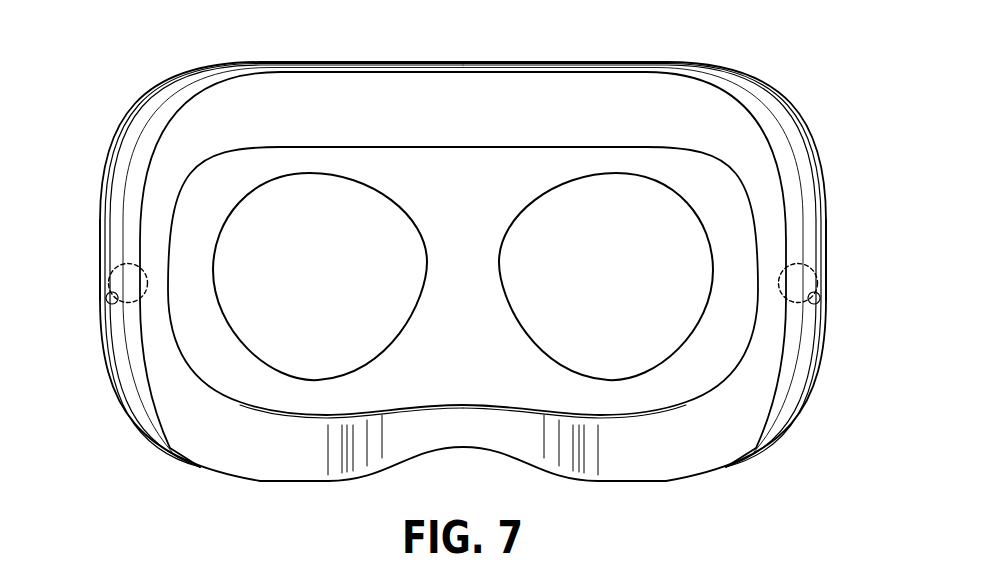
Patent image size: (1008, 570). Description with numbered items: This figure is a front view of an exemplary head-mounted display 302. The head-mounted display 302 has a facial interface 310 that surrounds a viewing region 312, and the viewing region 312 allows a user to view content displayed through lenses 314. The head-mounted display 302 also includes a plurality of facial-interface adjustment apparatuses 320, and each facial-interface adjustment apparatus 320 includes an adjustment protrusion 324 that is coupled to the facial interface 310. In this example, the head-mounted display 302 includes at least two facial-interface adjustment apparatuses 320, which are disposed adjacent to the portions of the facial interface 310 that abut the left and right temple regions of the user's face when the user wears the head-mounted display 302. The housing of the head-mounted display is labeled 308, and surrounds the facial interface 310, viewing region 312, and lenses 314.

The head-mounted display 302 is at (116, 88).
The housing 308 is at (816, 87).
The facial interface 310 is at (167, 448).
The viewing region 312 is at (720, 195).
The lenses 314 is at (347, 177).
The facial-interface adjustment apparatus 320 is at (100, 281).
The adjustment protrusion 324 is at (116, 299).